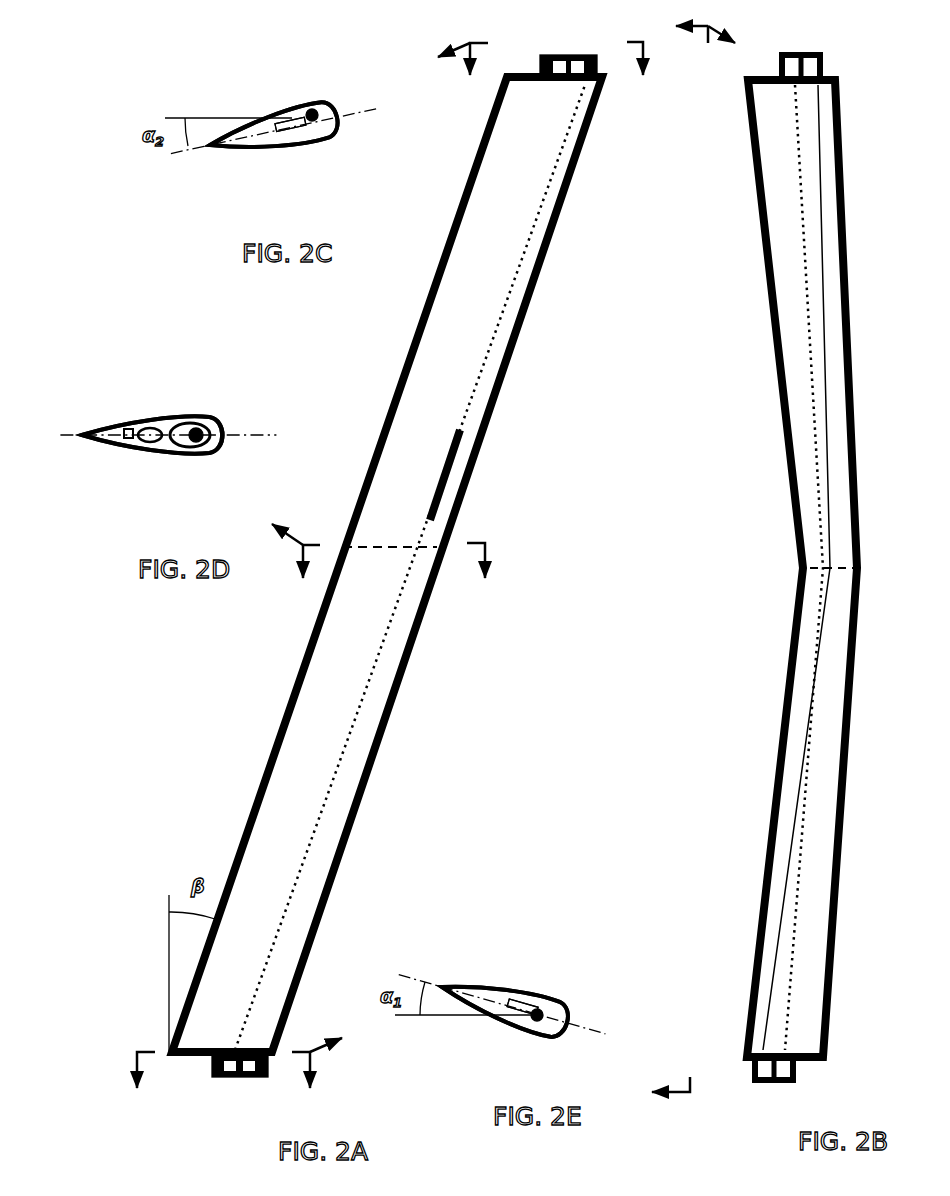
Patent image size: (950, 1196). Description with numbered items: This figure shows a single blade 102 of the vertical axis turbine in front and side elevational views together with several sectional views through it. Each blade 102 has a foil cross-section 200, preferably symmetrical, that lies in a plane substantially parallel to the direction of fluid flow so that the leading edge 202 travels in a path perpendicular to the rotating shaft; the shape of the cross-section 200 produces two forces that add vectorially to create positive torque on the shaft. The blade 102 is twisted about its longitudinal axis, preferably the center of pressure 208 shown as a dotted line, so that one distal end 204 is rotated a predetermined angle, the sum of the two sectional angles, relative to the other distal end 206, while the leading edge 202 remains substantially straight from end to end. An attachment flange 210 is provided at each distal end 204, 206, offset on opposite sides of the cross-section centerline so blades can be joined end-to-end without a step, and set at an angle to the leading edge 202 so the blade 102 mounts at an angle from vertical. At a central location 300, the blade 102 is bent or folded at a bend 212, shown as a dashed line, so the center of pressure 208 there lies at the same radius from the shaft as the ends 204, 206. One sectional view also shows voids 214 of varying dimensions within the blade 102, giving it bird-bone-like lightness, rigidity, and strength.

In FIG. 2A, the blade 102 is at (140, 764).
In FIG. 2C, the foil cross-section 200 is at (262, 150).
In FIG. 2D, the foil cross-section 200 is at (162, 413).
In FIG. 2E, the foil cross-section 200 is at (489, 984).
In FIG. 2A, the leading edge 202 is at (425, 633).
In FIG. 2B, the leading edge 202 is at (781, 897).
In FIG. 2C, the leading edge 202 is at (348, 121).
In FIG. 2D, the leading edge 202 is at (226, 423).
In FIG. 2E, the leading edge 202 is at (573, 1019).
In FIG. 2A, the distal end 204 is at (193, 1064).
In FIG. 2B, the distal end 204 is at (812, 1063).
In FIG. 2A, the distal end 206 is at (531, 72).
In FIG. 2B, the distal end 206 is at (781, 90).
In FIG. 2C, the center of pressure 208 is at (314, 103).
In FIG. 2D, the center of pressure 208 is at (197, 419).
In FIG. 2E, the center of pressure 208 is at (537, 1030).
In FIG. 2A, the attachment flange 210 is at (580, 54).
In FIG. 2B, the attachment flange 210 is at (823, 53).
In FIG. 2C, the attachment flange 210 is at (305, 138).
In FIG. 2E, the attachment flange 210 is at (530, 993).
In FIG. 2A, the bend 212 is at (368, 542).
In FIG. 2B, the bend 212 is at (806, 563).
In FIG. 2D, the voids 214 is at (170, 448).
In FIG. 2A, the central location 300 is at (460, 535).